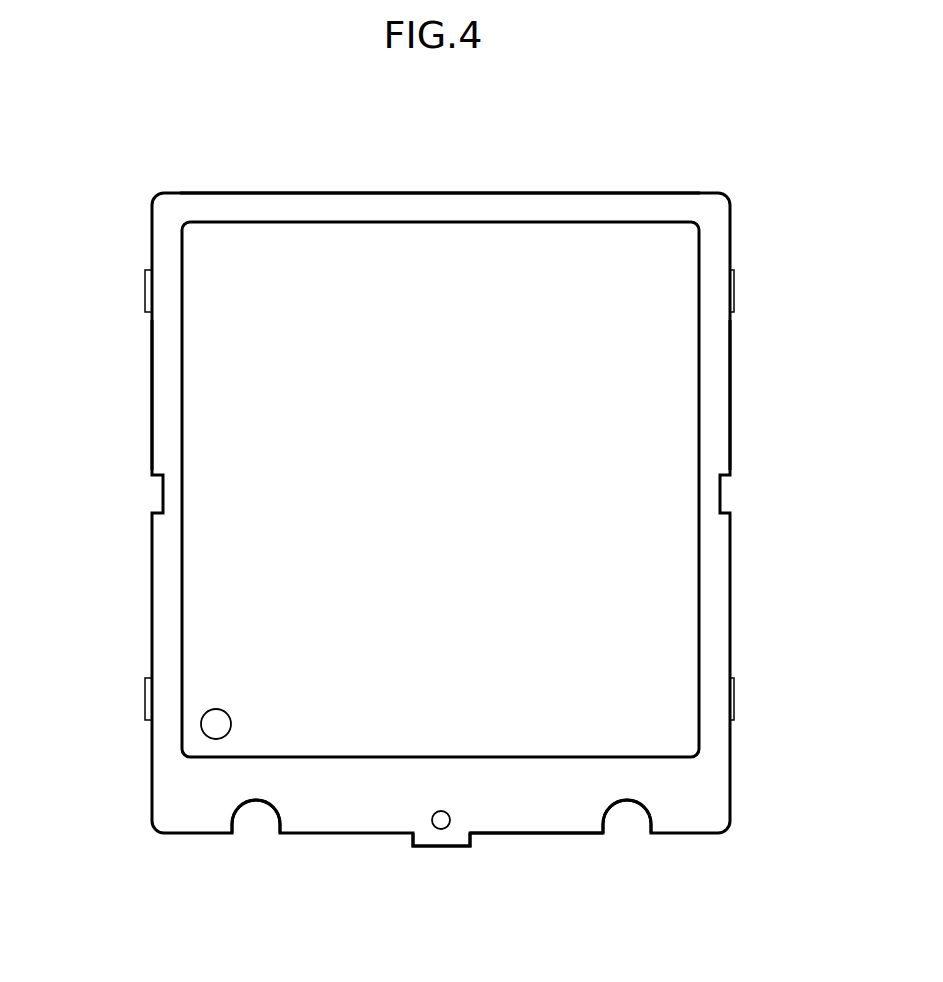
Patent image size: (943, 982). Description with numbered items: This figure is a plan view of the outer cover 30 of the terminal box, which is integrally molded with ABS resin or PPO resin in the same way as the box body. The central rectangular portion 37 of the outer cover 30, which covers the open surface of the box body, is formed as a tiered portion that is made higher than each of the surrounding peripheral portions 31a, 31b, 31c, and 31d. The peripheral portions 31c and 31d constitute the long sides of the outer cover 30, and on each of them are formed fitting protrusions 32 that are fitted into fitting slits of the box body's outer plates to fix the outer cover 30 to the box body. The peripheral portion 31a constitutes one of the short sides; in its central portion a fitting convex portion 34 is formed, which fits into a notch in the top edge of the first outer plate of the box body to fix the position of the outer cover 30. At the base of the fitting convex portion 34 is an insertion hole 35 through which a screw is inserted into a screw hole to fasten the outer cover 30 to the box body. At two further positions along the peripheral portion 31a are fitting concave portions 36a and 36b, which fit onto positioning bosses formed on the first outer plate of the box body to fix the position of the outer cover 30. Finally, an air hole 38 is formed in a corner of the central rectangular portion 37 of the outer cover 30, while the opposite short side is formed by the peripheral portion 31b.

The outer cover 30 is at (584, 189).
The peripheral portion 31a is at (522, 818).
The peripheral portion 31b is at (441, 210).
The peripheral portion 31c is at (714, 414).
The peripheral portion 31d is at (167, 393).
The fitting protrusion 32 is at (147, 291).
The fitting convex portion 34 is at (424, 847).
The insertion hole 35 is at (440, 829).
The fitting concave portion 36a is at (641, 814).
The fitting concave portion 36b is at (237, 818).
The central rectangular portion 37 is at (279, 250).
The air hole 38 is at (214, 727).